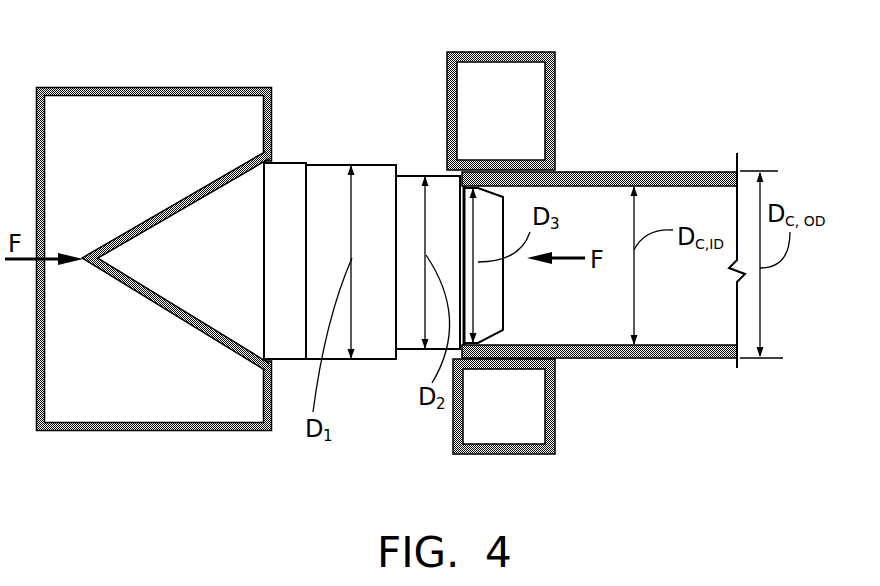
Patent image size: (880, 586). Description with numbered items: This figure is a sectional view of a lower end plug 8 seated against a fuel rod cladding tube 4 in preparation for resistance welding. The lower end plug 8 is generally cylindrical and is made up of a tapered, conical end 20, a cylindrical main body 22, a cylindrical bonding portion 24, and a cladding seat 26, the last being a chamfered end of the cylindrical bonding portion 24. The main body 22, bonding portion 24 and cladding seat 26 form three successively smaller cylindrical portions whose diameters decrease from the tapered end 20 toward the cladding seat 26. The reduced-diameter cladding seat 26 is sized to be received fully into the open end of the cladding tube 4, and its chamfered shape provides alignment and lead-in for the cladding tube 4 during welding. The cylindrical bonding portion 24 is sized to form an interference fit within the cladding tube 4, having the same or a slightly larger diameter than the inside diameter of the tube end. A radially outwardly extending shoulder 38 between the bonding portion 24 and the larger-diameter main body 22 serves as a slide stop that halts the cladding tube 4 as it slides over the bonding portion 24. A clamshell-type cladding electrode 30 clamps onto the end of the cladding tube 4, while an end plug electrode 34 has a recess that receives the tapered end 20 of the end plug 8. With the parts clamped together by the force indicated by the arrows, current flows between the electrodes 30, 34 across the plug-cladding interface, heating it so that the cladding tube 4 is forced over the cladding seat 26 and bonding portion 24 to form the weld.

The cladding tube 4 is at (678, 170).
The lower end plug 8 is at (348, 147).
The tapered end 20 is at (207, 293).
The cylindrical main body 22 is at (366, 360).
The cylindrical bonding portion 24 is at (412, 352).
The cladding seat 26 is at (490, 295).
The cladding electrode 30 is at (510, 118).
The end plug electrode 34 is at (178, 88).
The shoulder 38 is at (398, 167).